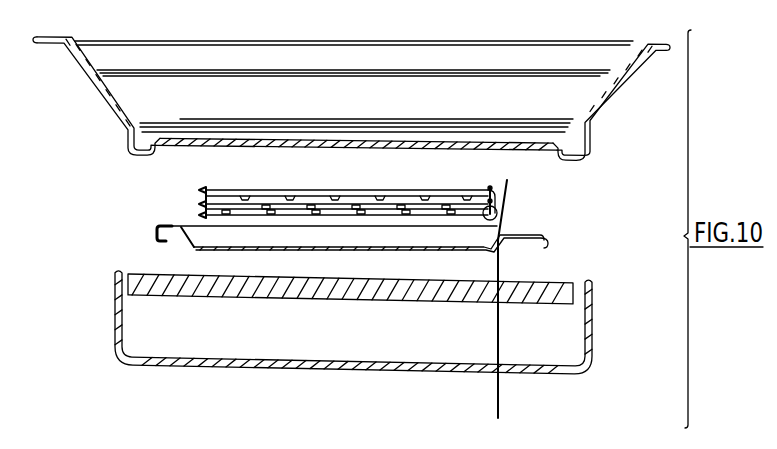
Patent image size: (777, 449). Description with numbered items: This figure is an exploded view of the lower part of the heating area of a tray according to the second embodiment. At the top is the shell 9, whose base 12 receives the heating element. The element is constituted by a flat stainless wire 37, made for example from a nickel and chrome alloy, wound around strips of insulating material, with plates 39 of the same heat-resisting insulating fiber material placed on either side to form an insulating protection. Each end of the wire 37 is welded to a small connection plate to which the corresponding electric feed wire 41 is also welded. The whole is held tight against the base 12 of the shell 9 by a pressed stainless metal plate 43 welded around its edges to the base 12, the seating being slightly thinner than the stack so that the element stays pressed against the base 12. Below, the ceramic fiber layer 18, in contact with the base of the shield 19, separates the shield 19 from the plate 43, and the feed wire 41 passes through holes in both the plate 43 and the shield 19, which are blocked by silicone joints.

The shell 9 is at (108, 105).
The base 12 is at (356, 146).
The ceramic fiber layer 18 is at (271, 296).
The shield 19 is at (594, 313).
The flat stainless wire 37 is at (276, 191).
The plates 39 is at (481, 195).
The electric feed wire 41 is at (503, 387).
The pressed stainless metal plate 43 is at (536, 232).